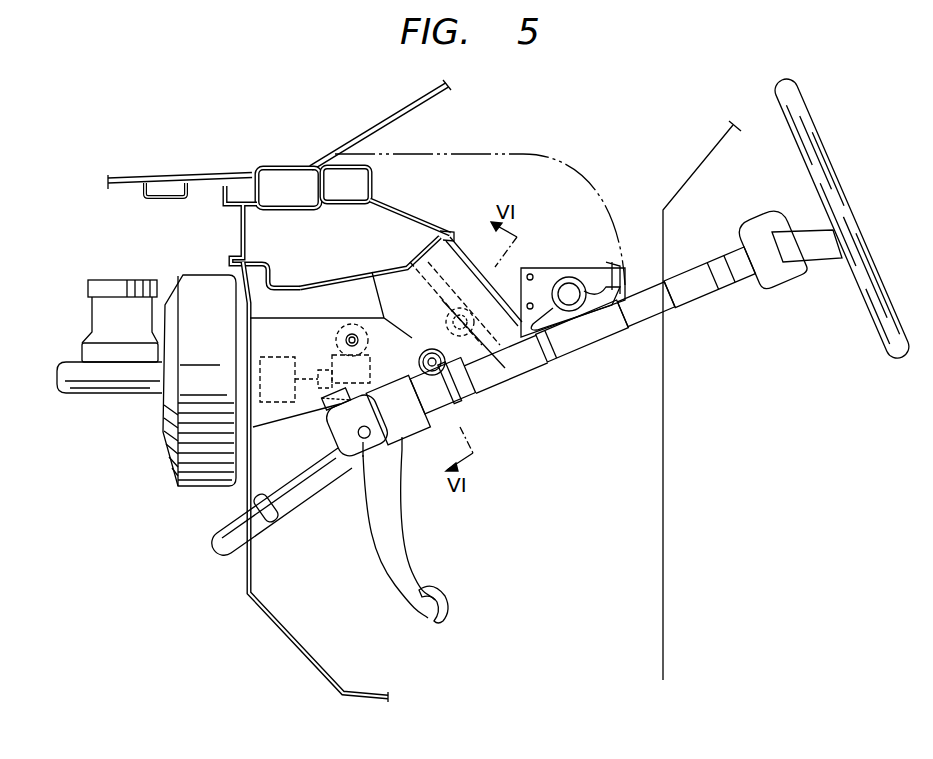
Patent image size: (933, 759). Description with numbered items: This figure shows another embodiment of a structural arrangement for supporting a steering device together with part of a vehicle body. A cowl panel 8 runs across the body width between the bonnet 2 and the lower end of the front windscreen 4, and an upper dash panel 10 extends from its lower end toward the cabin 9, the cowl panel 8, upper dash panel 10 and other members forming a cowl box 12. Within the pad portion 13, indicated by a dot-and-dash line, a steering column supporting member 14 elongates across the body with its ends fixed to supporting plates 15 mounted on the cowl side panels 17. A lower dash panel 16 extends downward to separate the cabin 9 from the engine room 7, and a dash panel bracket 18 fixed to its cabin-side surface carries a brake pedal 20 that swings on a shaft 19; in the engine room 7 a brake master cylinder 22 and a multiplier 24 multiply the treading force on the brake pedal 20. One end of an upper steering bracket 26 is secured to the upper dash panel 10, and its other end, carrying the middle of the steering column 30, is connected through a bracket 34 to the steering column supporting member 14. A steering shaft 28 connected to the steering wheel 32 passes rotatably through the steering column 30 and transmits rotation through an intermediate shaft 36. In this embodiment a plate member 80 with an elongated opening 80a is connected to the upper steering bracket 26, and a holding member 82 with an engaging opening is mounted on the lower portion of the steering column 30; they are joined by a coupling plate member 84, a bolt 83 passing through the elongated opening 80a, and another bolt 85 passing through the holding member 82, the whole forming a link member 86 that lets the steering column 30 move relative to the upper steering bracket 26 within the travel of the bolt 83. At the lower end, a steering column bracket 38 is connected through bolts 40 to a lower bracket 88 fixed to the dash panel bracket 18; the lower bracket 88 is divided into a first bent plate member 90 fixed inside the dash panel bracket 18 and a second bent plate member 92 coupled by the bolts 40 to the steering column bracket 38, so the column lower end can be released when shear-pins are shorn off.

The bonnet 2 is at (121, 178).
The front windscreen 4 is at (383, 123).
The engine room 7 is at (96, 526).
The cowl panel 8 is at (241, 232).
The cabin 9 is at (600, 589).
The upper dash panel 10 is at (368, 268).
The cowl box 12 is at (337, 246).
The pad portion 13 is at (470, 153).
The steering column supporting member 14 is at (553, 273).
The supporting plate 15 is at (570, 273).
The lower dash panel 16 is at (246, 487).
The cowl side panel 17 is at (664, 465).
The dash panel bracket 18 is at (292, 315).
The shaft 19 is at (337, 341).
The brake pedal 20 is at (400, 557).
The brake master cylinder 22 is at (120, 392).
The multiplier 24 is at (193, 483).
The upper steering bracket 26 is at (447, 280).
The steering shaft 28 is at (737, 251).
The steering column 30 is at (640, 333).
The steering wheel 32 is at (808, 101).
The bracket 34 is at (605, 268).
The intermediate shaft 36 is at (320, 480).
The steering column bracket 38 is at (408, 433).
The bolts 40 is at (367, 433).
The plate member 80 is at (477, 323).
The elongated opening 80a is at (447, 308).
The holding member 82 is at (460, 412).
The bolt 83 is at (468, 324).
The coupling plate member 84 is at (446, 318).
The bolt 85 is at (420, 364).
The link member 86 is at (476, 372).
The lower bracket 88 is at (413, 423).
The first bent plate member 90 is at (322, 363).
The second bent plate member 92 is at (330, 424).